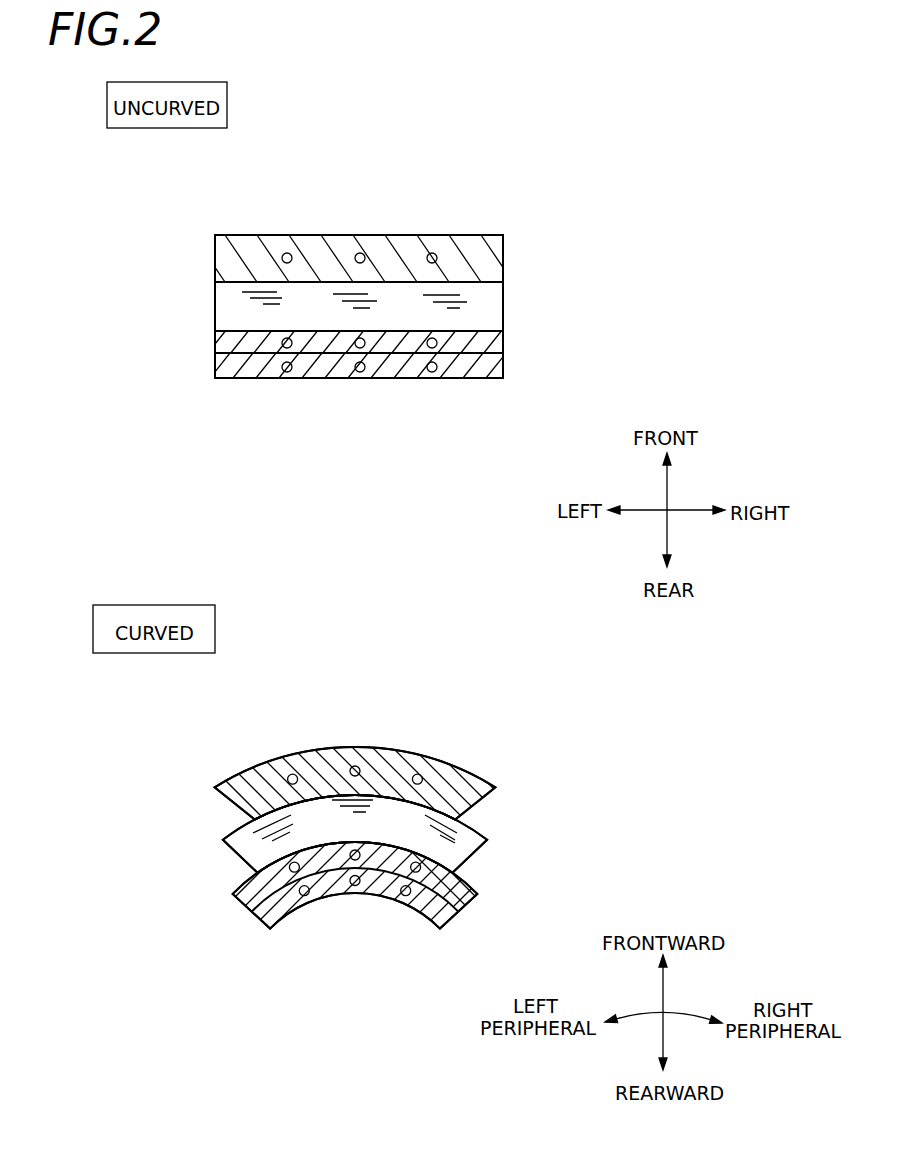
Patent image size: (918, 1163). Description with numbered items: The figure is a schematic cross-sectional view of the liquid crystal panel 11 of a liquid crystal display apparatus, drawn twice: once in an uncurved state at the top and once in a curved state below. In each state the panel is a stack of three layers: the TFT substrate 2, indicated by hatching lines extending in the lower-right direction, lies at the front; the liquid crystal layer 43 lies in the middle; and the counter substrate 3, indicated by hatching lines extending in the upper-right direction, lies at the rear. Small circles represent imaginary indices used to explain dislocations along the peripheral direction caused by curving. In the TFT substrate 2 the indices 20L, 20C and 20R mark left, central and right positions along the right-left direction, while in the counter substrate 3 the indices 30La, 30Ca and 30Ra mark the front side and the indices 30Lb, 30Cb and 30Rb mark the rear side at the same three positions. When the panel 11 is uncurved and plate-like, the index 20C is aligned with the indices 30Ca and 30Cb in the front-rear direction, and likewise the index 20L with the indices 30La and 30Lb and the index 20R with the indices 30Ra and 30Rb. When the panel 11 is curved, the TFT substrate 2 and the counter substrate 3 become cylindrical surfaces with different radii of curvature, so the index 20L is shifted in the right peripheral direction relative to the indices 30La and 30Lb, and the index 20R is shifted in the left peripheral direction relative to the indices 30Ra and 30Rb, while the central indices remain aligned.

The liquid crystal panel 11 is at (512, 216).
The TFT substrate 2 is at (493, 255).
The liquid crystal layer 43 is at (497, 310).
The counter substrate 3 is at (497, 347).
The index 20L is at (287, 253).
The index 20C is at (360, 253).
The index 20R is at (432, 253).
The index 30La is at (283, 341).
The index 30Ca is at (355, 342).
The index 30Ra is at (427, 342).
The index 30Lb is at (292, 364).
The index 30Cb is at (366, 365).
The index 30Rb is at (437, 366).